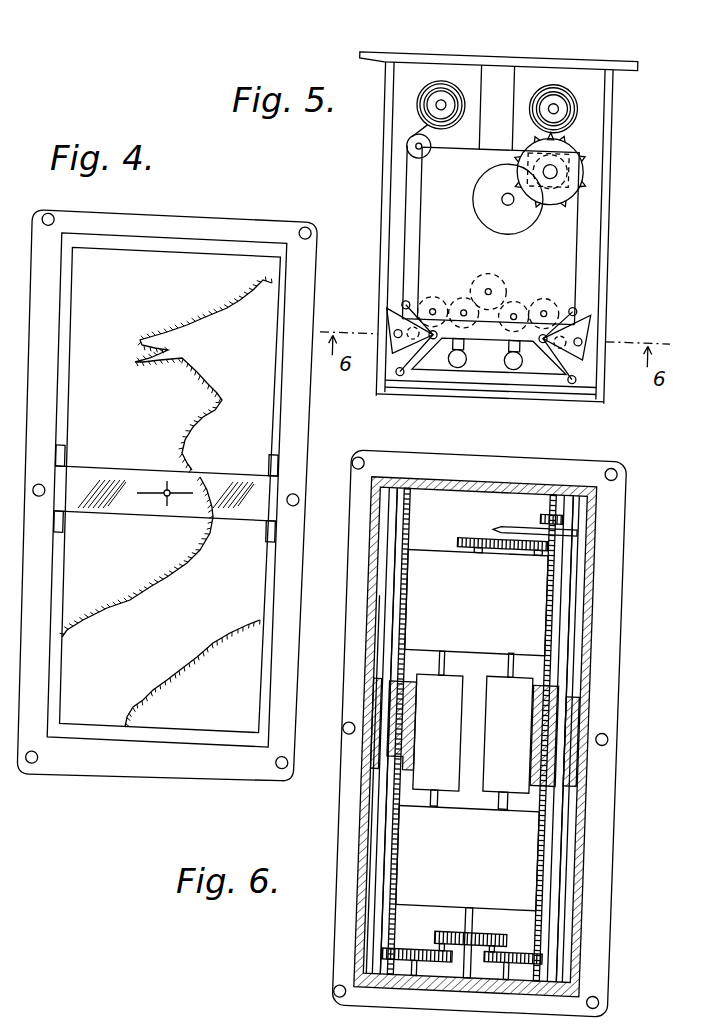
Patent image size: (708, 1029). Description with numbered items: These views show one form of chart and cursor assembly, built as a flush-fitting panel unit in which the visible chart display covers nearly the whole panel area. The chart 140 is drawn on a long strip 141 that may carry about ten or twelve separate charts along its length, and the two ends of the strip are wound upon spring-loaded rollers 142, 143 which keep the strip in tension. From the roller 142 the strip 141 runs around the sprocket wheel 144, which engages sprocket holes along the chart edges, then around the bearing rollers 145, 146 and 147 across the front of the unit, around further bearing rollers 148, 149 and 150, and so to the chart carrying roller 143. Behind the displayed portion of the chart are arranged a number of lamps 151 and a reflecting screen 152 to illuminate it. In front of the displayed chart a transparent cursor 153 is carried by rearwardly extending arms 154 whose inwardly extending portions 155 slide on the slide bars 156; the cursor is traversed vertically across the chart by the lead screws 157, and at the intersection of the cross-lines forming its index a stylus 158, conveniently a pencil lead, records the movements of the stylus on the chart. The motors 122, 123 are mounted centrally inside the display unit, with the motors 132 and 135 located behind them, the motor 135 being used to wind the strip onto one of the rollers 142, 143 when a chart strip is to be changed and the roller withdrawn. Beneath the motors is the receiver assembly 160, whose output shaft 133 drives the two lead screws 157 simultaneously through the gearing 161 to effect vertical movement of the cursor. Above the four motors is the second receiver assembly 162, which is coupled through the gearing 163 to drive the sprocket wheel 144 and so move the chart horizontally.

In FIG. 4, the chart 140 is at (233, 333).
In FIG. 4, the transparent cursor 153 is at (235, 477).
In FIG. 4, the inwardly extending portions 155 is at (61, 520).
In FIG. 5, the inwardly extending portions 155 is at (590, 320).
In FIG. 6, the inwardly extending portions 155 is at (560, 718).
In FIG. 4, the stylus 158 is at (167, 508).
In FIG. 5, the strip 141 is at (583, 212).
In FIG. 5, the roller 142 is at (556, 100).
In FIG. 5, the chart carrying roller 143 is at (442, 100).
In FIG. 5, the sprocket wheel 144 is at (556, 150).
In FIG. 6, the sprocket wheel 144 is at (575, 532).
In FIG. 5, the bearing roller 145 is at (575, 312).
In FIG. 5, the bearing roller 146 is at (548, 350).
In FIG. 5, the bearing roller 147 is at (577, 380).
In FIG. 5, the bearing roller 148 is at (412, 363).
In FIG. 5, the bearing roller 149 is at (433, 340).
In FIG. 5, the bearing roller 150 is at (405, 305).
In FIG. 5, the lamps 151 is at (455, 370).
In FIG. 5, the reflecting screen 152 is at (518, 370).
In FIG. 5, the rearwardly extending arms 154 is at (392, 362).
In FIG. 5, the slide bars 156 is at (433, 335).
In FIG. 6, the slide bars 156 is at (378, 887).
In FIG. 6, the lead screws 157 is at (397, 898).
In FIG. 6, the receiver assembly 160 is at (562, 838).
In FIG. 6, the gearing 161 is at (466, 950).
In FIG. 6, the second receiver assembly 162 is at (528, 602).
In FIG. 6, the gearing 163 is at (486, 540).
In FIG. 6, the motor 122 is at (520, 700).
In FIG. 6, the motor 123 is at (403, 793).
In FIG. 6, the motor 132 is at (524, 796).
In FIG. 6, the output shaft 133 is at (472, 928).
In FIG. 6, the motor 135 is at (478, 688).